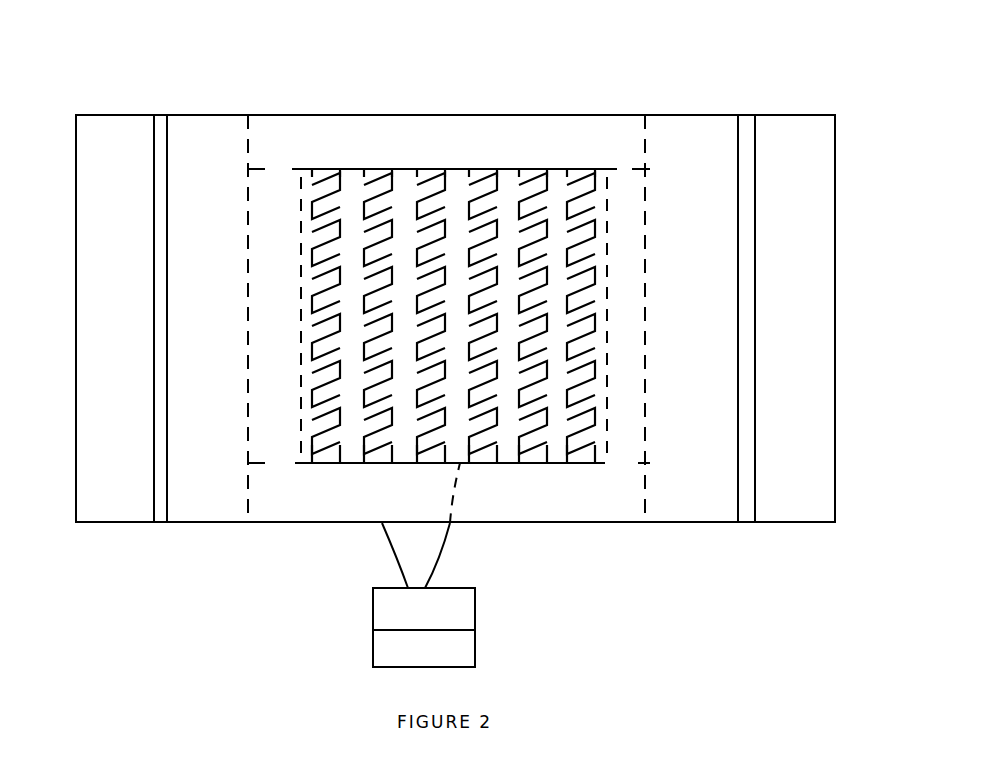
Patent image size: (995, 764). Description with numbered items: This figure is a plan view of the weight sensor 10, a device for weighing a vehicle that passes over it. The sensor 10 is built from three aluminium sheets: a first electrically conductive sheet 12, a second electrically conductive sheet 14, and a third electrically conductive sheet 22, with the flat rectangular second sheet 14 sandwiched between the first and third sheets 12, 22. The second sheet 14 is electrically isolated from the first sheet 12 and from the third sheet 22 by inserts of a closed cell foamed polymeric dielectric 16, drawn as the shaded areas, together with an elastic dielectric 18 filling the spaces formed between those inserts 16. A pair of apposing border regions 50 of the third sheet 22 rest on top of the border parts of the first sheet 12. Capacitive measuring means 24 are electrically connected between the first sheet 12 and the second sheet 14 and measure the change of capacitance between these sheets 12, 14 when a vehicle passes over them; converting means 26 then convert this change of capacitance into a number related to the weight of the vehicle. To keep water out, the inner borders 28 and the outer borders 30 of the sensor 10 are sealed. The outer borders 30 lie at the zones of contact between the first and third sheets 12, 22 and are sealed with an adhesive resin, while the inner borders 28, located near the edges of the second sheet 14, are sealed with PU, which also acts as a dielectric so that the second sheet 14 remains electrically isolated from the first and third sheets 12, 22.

The weight sensor 10 is at (727, 68).
The first electrically conductive sheet 12 is at (113, 123).
The second electrically conductive sheet 14 is at (306, 177).
The inserts of closed cell foamed polymeric dielectric 16 is at (433, 177).
The elastic dielectric 18 is at (510, 177).
The third electrically conductive sheet 22 is at (590, 114).
The capacitive measuring means 24 is at (450, 608).
The converting means 26 is at (450, 646).
The inner borders 28 is at (381, 135).
The outer borders 30 is at (197, 488).
The apposing border regions 50 is at (685, 147).